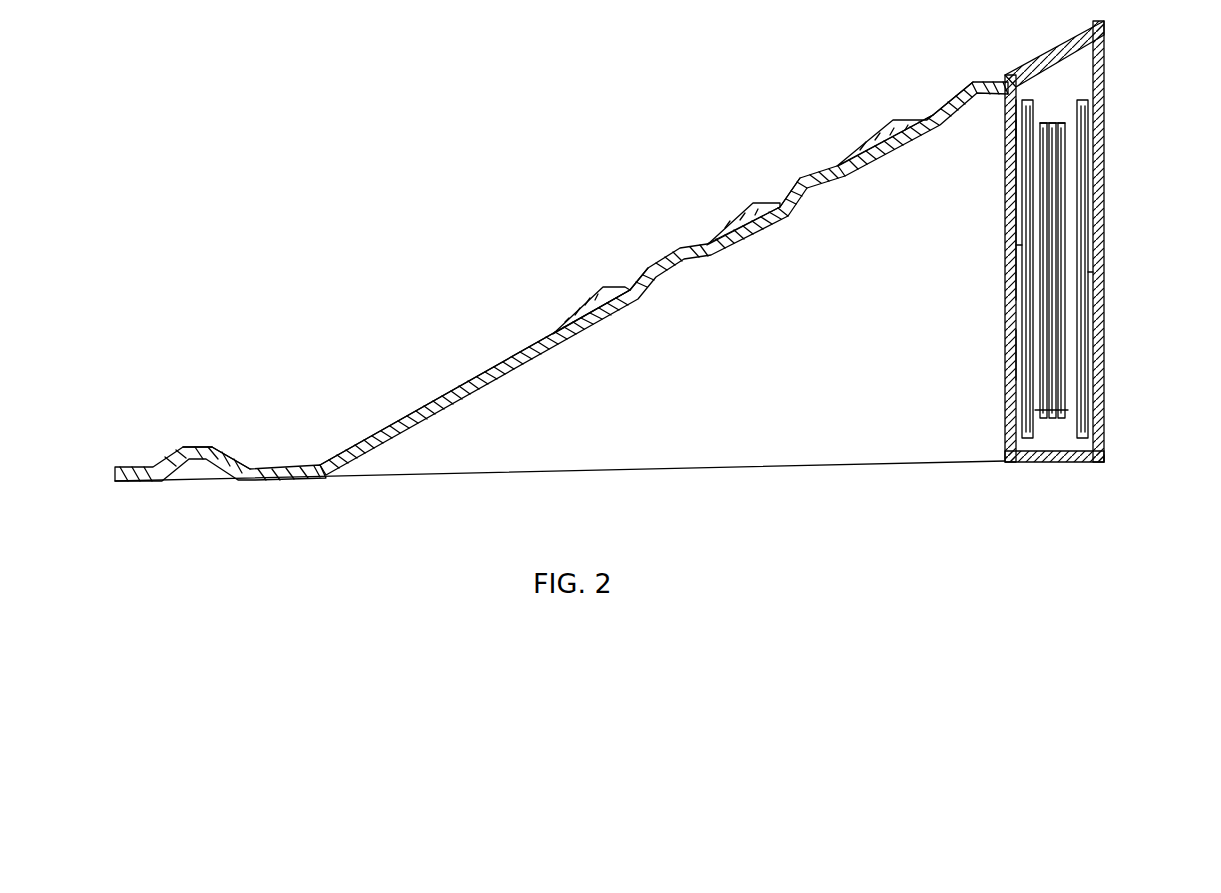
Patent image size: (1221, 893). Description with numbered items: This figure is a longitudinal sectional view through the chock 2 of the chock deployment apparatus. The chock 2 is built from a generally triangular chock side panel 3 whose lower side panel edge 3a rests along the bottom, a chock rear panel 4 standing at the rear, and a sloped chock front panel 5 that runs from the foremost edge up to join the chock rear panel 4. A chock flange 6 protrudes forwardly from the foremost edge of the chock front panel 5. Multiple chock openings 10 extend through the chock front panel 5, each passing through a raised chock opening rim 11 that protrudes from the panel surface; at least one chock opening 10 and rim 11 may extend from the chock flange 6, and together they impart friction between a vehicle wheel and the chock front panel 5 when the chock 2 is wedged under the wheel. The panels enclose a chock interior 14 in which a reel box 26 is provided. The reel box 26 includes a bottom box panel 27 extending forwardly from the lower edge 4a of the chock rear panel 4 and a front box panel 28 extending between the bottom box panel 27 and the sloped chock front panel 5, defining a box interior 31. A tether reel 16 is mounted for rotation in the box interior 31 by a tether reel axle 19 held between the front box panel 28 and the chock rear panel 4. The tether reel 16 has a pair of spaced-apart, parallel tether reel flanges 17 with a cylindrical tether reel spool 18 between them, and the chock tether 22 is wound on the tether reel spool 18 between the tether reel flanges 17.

The chock 2 is at (450, 393).
The chock side panel 3 is at (773, 363).
The lower side panel edge 3a is at (690, 468).
The chock rear panel 4 is at (1105, 240).
The lower edge of the chock rear panel 4a is at (1105, 463).
The chock front panel 5 is at (513, 354).
The chock flange 6 is at (133, 466).
The chock opening 10 is at (197, 443).
The raised chock opening rim 11 is at (230, 453).
The chock interior 14 is at (850, 417).
The tether reel 16 is at (1007, 120).
The tether reel flange 17 is at (1023, 185).
The tether reel spool 18 is at (1040, 120).
The tether reel axle 19 is at (1020, 245).
The chock tether 22 is at (1052, 372).
The reel box 26 is at (1007, 281).
The bottom box panel 27 is at (1073, 462).
The front box panel 28 is at (1008, 348).
The box interior 31 is at (1054, 423).